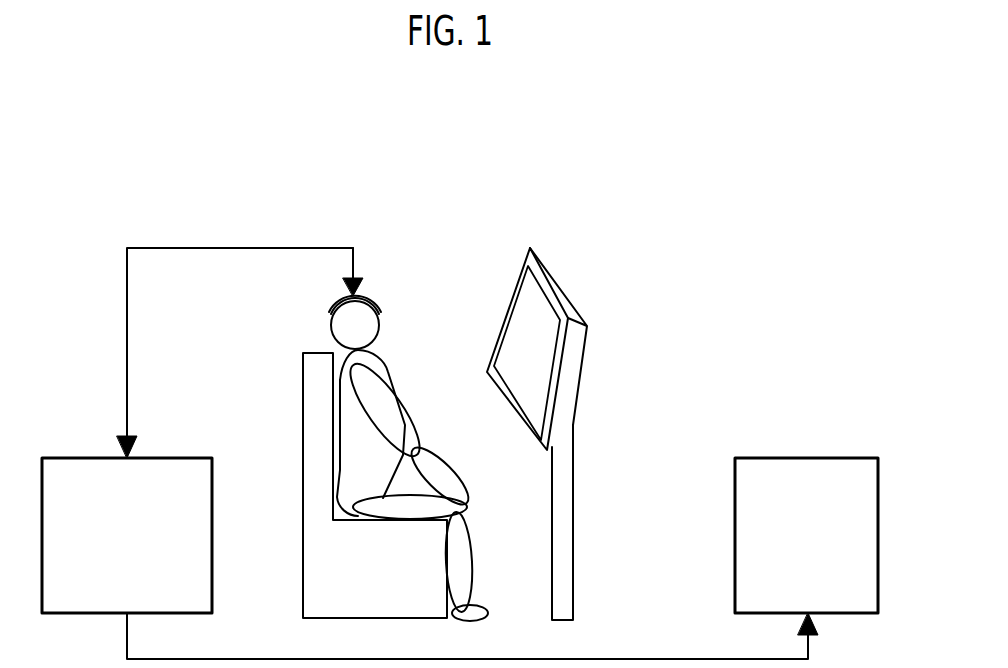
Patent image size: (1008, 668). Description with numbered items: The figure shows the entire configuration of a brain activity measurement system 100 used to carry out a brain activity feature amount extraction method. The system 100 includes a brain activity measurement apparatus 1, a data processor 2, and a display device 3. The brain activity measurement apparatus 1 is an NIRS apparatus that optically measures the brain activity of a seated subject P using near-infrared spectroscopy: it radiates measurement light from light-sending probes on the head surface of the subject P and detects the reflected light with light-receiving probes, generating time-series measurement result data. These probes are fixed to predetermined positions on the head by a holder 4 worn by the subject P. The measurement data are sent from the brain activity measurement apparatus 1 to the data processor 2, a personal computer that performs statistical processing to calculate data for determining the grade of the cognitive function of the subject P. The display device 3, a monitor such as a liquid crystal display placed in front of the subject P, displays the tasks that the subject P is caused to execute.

The brain activity measurement system 100 is at (633, 156).
The brain activity measurement apparatus 1 is at (83, 458).
The data processor 2 is at (846, 458).
The display device 3 is at (563, 285).
The holder 4 is at (372, 300).
The subject P is at (405, 414).